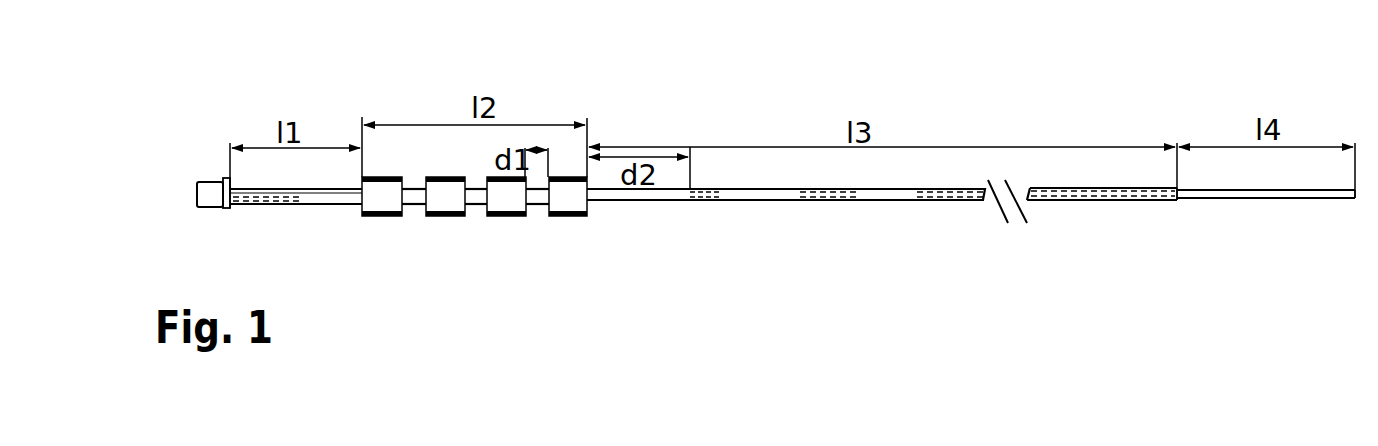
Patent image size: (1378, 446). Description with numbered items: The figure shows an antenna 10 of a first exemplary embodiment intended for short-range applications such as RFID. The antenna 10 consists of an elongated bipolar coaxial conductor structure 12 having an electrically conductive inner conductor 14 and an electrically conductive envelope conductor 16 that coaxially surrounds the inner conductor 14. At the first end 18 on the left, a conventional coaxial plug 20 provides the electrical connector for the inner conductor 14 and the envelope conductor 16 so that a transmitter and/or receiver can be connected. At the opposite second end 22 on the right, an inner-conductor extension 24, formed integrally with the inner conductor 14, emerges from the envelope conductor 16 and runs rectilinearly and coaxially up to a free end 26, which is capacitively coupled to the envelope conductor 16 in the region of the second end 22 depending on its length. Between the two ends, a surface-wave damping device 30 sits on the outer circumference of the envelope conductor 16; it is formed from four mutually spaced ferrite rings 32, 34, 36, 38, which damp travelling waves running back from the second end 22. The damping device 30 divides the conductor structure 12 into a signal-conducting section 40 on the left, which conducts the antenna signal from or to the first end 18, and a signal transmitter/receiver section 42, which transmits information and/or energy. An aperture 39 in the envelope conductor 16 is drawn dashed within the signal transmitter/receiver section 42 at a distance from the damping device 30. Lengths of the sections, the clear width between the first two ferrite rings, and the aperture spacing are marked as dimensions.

The antenna 10 is at (697, 82).
The coaxial conductor structure 12 is at (850, 205).
The inner conductor 14 is at (1083, 190).
The envelope conductor 16 is at (1122, 200).
The first end 18 is at (228, 215).
The coaxial plug 20 is at (205, 190).
The second end 22 is at (1180, 210).
The inner-conductor extension 24 is at (1302, 197).
The free end 26 is at (1357, 203).
The surface-wave damping device 30 is at (451, 263).
The ferrite ring 32 is at (568, 202).
The ferrite ring 34 is at (508, 202).
The ferrite ring 36 is at (447, 203).
The ferrite ring 38 is at (385, 205).
The aperture 39 is at (702, 201).
The signal-conducting section 40 is at (305, 122).
The signal transmitter/receiver section 42 is at (1051, 157).